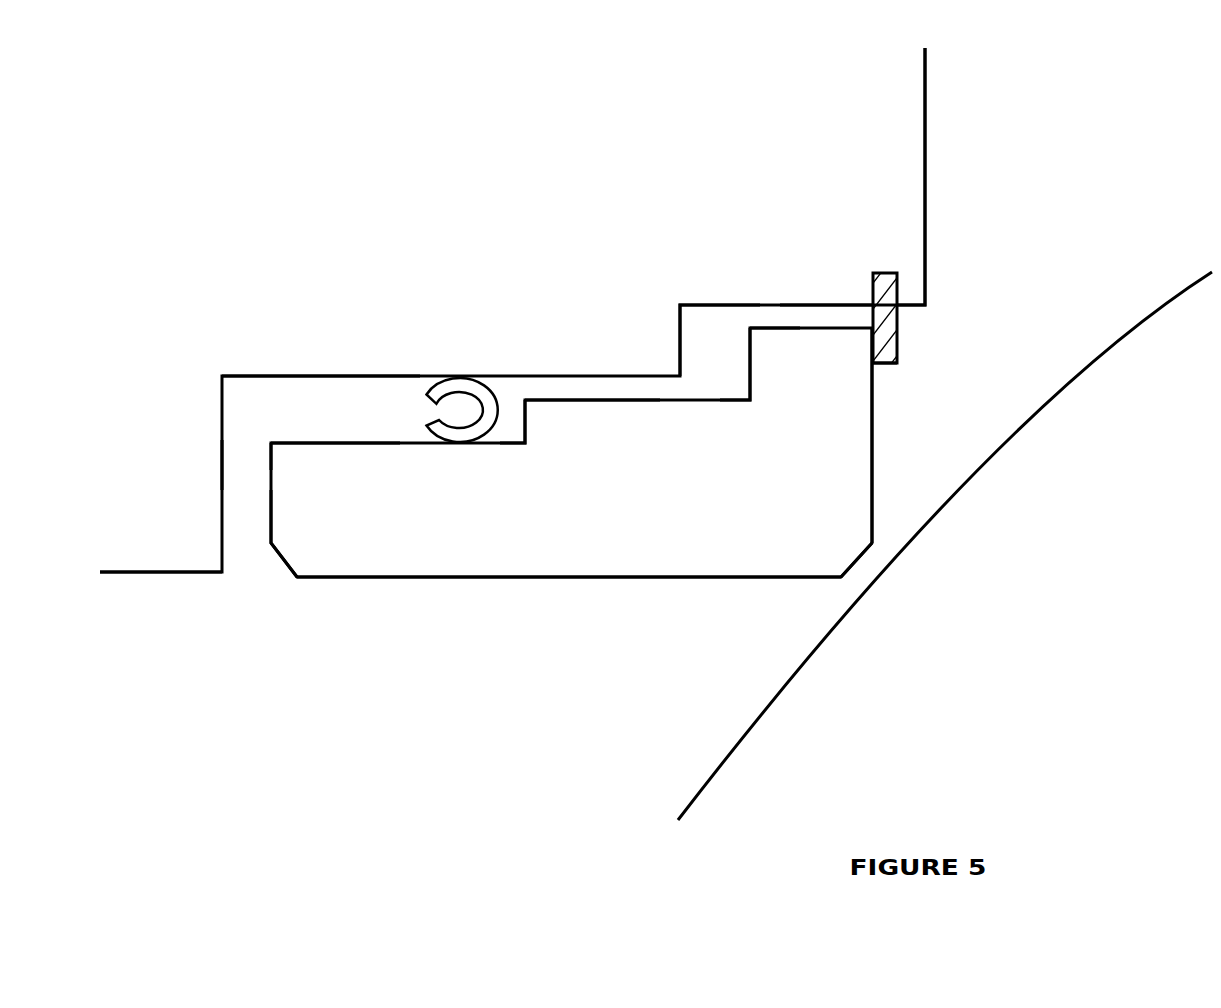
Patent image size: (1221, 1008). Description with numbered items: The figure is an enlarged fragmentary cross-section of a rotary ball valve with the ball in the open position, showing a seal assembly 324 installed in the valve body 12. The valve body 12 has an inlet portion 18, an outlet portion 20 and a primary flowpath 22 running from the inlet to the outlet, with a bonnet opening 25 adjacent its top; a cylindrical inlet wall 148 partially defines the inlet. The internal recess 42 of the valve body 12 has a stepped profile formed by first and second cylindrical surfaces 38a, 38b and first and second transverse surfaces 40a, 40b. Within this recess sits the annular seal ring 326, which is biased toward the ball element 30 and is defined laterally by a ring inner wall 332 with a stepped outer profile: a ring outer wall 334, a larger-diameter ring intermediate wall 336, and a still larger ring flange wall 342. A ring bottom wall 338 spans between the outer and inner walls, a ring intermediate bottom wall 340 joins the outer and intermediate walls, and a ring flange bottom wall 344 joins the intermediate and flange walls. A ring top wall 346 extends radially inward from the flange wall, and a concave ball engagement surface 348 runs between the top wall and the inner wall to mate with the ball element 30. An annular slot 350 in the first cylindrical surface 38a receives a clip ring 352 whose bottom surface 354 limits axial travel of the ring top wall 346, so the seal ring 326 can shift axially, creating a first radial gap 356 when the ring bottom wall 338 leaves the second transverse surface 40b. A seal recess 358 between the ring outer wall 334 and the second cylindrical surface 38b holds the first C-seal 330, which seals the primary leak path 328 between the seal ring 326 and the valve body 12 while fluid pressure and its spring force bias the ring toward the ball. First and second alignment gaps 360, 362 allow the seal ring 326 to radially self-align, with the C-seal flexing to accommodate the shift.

The valve body 12 is at (225, 266).
The inlet portion 18 is at (96, 678).
The outlet portion 20 is at (1135, 279).
The primary flowpath 22 is at (205, 723).
The bonnet opening 25 is at (997, 184).
The ball element 30 is at (719, 755).
The first cylindrical surface 38a is at (740, 310).
The second cylindrical surface 38b is at (244, 384).
The first transverse surface 40a is at (683, 343).
The second transverse surface 40b is at (222, 467).
The internal recess 42 is at (1007, 397).
The cylindrical inlet wall 148 is at (137, 578).
The seal assembly 324 is at (997, 305).
The seal ring 326 is at (571, 452).
The primary leak path 328 is at (247, 582).
The first C-seal 330 is at (437, 378).
The ring inner wall 332 is at (572, 579).
The ring outer wall 334 is at (328, 443).
The ring intermediate wall 336 is at (543, 398).
The ring bottom wall 338 is at (268, 443).
The ring intermediate bottom wall 340 is at (523, 420).
The ring flange wall 342 is at (777, 327).
The ring flange bottom wall 344 is at (747, 366).
The ring top wall 346 is at (875, 425).
The ball engagement surface 348 is at (857, 562).
The annular slot 350 is at (898, 278).
The clip ring 352 is at (887, 331).
The bottom surface 354 is at (872, 346).
The first radial gap 356 is at (242, 521).
The seal recess 358 is at (363, 390).
The first alignment gap 360 is at (614, 391).
The second alignment gap 362 is at (830, 316).